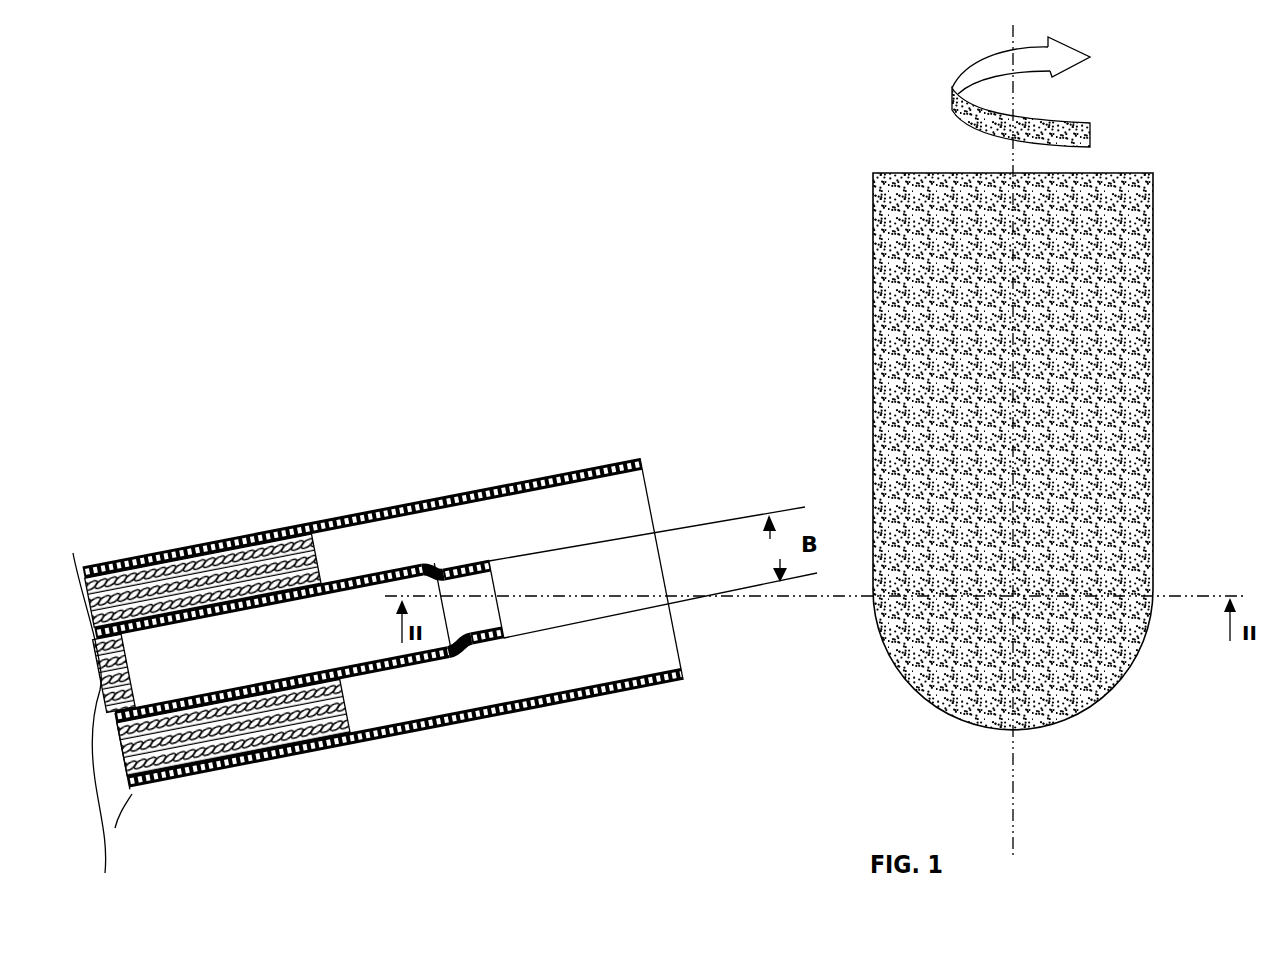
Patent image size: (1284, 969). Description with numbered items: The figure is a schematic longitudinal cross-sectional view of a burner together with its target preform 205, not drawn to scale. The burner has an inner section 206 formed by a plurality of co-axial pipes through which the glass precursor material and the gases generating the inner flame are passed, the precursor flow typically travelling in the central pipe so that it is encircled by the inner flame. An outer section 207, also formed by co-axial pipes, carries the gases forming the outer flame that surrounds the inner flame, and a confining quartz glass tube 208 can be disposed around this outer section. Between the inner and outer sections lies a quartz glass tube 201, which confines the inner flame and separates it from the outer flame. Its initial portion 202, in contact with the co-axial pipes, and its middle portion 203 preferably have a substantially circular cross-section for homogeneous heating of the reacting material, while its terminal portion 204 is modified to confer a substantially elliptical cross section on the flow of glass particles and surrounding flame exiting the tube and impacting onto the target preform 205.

The quartz glass tube 201 is at (412, 668).
The initial portion 202 is at (163, 667).
The middle portion 203 is at (333, 622).
The terminal portion 204 is at (473, 590).
The target preform 205 is at (903, 383).
The inner section 206 is at (104, 731).
The outer section 207 is at (233, 778).
The confining quartz glass tube 208 is at (555, 705).